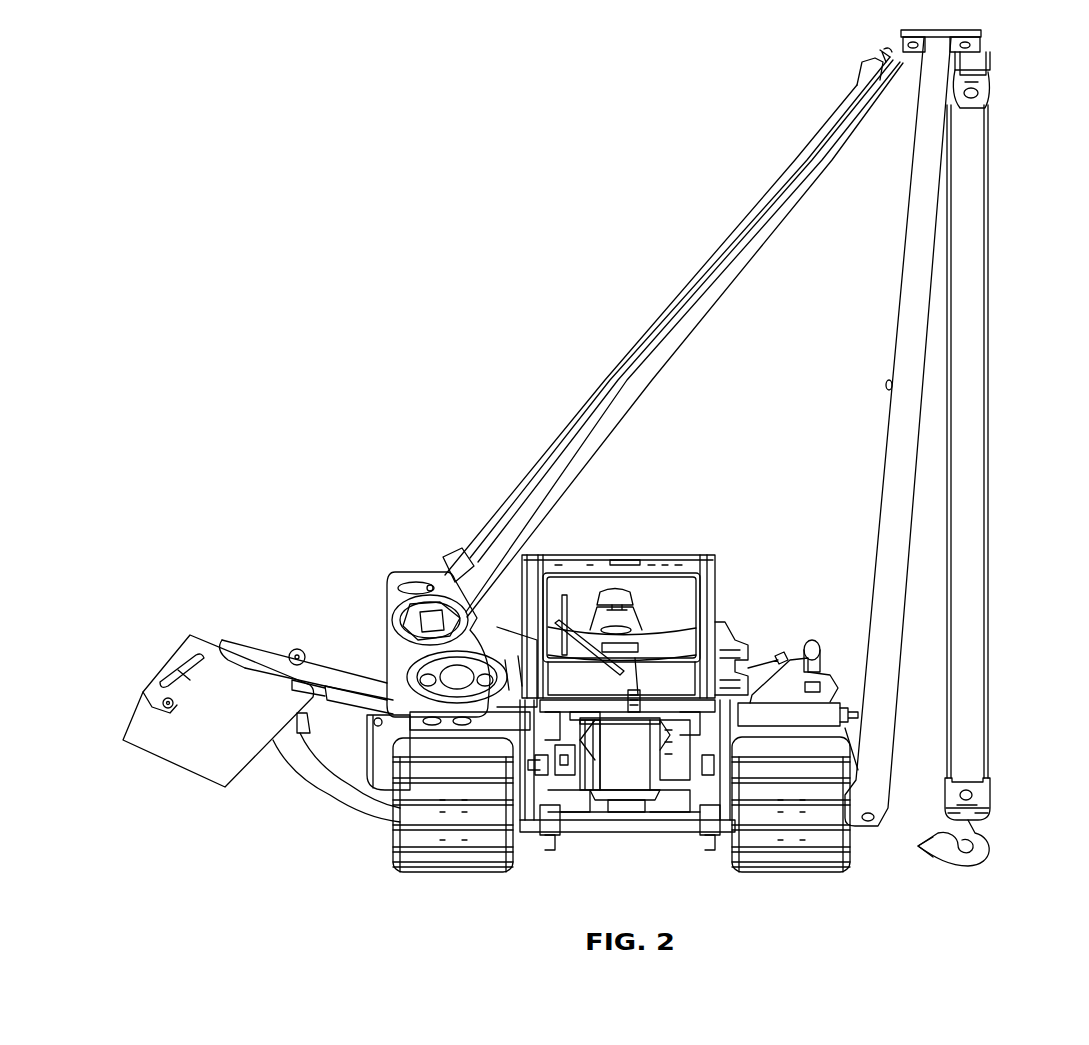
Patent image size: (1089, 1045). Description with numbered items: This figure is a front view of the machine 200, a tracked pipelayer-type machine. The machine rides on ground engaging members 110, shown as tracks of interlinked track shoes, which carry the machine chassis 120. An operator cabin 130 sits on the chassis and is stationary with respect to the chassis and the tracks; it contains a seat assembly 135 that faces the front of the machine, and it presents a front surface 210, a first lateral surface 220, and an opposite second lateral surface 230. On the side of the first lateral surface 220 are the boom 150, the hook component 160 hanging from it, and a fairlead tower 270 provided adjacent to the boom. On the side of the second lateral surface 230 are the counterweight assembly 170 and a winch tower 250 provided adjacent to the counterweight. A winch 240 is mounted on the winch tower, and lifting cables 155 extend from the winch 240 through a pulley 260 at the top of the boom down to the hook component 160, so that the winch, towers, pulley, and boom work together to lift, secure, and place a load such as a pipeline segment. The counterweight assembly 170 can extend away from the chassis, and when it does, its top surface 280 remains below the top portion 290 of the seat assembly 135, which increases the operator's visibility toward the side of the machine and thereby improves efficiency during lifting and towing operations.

The vehicle 200 is at (145, 56).
The ground engaging members 110 is at (460, 855).
The machine chassis 120 is at (572, 830).
The operator cabin 130 is at (684, 548).
The seat assembly 135 is at (626, 553).
The boom 150 is at (905, 290).
The lifting cables 155 is at (690, 290).
The hook component 160 is at (985, 800).
The counterweight assembly 170 is at (228, 785).
The front surface 210 is at (633, 698).
The first lateral surface 220 is at (718, 588).
The second lateral surface 230 is at (557, 553).
The winch 240 is at (397, 625).
The winch tower 250 is at (403, 557).
The pulley 260 is at (990, 66).
The fairlead tower 270 is at (780, 660).
The top surface 280 is at (188, 636).
The top portion 290 is at (588, 590).